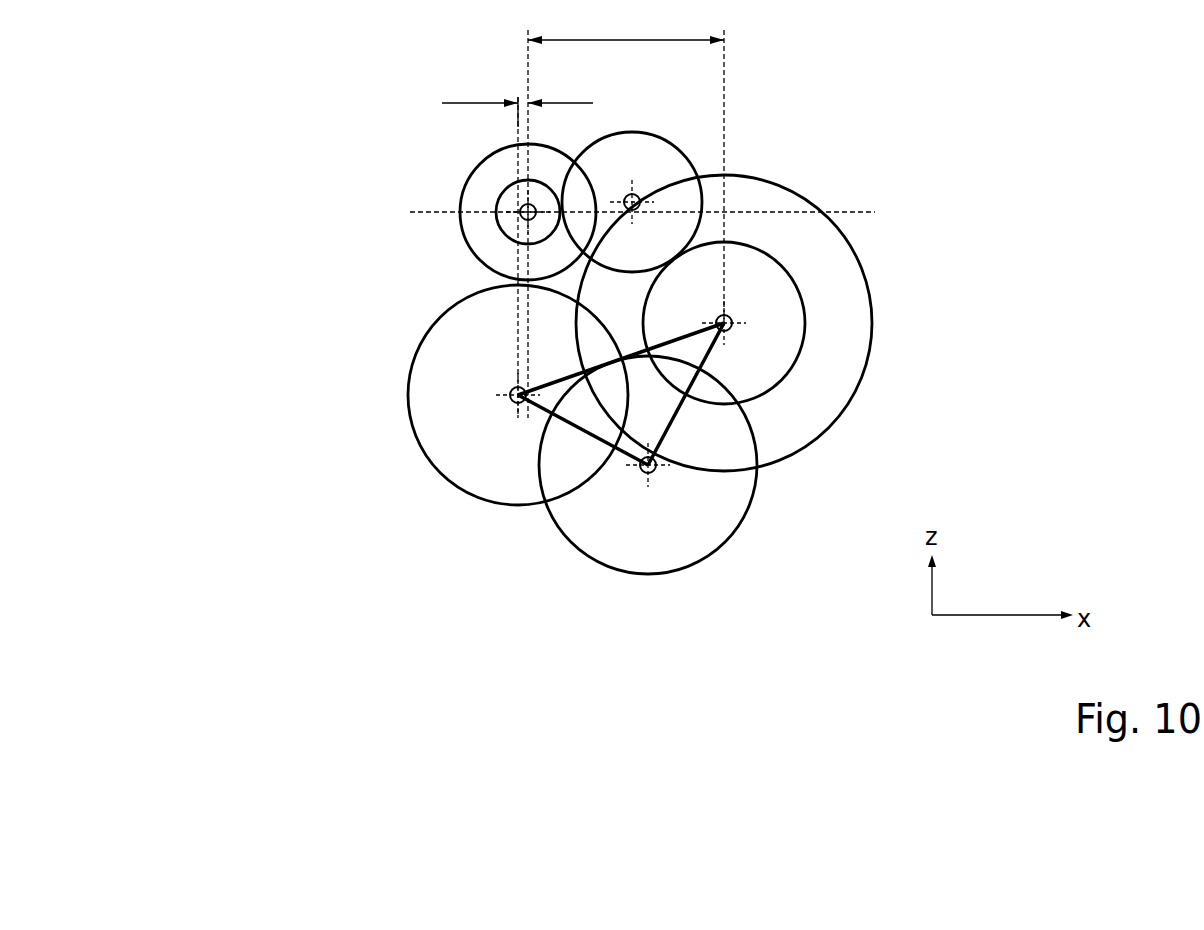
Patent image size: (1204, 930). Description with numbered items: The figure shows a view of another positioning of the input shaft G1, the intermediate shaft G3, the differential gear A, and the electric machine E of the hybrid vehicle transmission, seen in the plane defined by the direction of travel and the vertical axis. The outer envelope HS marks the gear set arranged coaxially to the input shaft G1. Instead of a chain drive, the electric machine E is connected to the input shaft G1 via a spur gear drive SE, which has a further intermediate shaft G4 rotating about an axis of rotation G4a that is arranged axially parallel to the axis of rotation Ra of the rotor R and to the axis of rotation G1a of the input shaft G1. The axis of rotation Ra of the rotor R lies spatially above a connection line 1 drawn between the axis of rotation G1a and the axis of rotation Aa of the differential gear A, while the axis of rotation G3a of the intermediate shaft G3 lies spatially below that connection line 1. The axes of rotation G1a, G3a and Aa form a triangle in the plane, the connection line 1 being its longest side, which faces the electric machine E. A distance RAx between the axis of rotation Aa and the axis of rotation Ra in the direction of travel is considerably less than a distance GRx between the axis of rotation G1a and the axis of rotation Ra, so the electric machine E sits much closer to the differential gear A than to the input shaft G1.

The connection line 1 is at (647, 378).
The outer envelope HS is at (777, 180).
The input shaft G1 is at (732, 312).
The axis of rotation of the input shaft G1a is at (733, 330).
The further intermediate shaft G4 is at (827, 165).
The spur gear drive SE is at (680, 145).
The axis of rotation of the further intermediate shaft G4a is at (625, 197).
The electric machine E is at (463, 190).
The rotor R is at (497, 222).
The axis of rotation of the rotor Ra is at (520, 218).
The differential gear A is at (453, 485).
The axis of rotation of the differential gear Aa is at (517, 403).
The intermediate shaft G3 is at (593, 560).
The axis of rotation of the intermediate shaft G3a is at (653, 473).
The distance between the input shaft axis and the rotor axis GRx is at (626, 22).
The distance between the differential gear axis and the rotor axis RAx is at (515, 93).